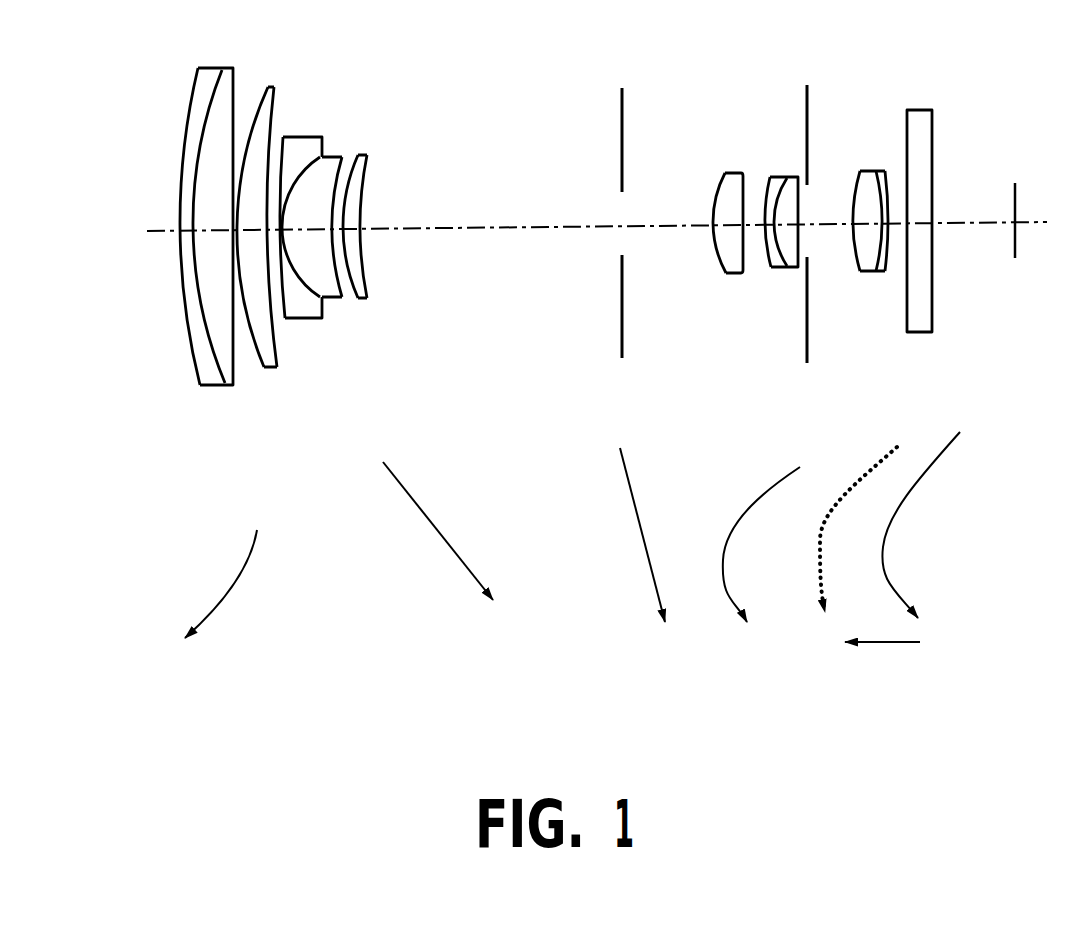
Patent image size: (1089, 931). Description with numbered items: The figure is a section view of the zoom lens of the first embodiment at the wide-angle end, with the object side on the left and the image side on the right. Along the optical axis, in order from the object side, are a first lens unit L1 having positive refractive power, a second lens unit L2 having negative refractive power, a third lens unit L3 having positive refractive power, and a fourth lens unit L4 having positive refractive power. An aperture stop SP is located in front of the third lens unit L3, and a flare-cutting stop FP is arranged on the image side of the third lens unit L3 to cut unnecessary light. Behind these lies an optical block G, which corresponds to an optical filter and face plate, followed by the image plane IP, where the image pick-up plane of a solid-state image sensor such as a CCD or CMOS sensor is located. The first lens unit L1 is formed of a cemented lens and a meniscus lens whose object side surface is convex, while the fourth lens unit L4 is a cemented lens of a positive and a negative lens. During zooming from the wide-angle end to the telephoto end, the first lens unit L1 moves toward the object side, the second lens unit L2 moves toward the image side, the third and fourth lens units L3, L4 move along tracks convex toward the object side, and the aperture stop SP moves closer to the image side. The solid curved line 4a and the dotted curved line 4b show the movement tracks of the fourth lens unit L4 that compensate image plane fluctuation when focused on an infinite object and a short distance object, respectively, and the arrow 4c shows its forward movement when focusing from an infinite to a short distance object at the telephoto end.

The first lens unit L1 is at (310, 430).
The second lens unit L2 is at (417, 345).
The third lens unit L3 is at (823, 413).
The fourth lens unit L4 is at (889, 307).
The aperture stop SP is at (627, 325).
The flare-cutting stop FP is at (807, 123).
The optical block G is at (918, 118).
The image plane IP is at (1015, 200).
The solid curved line 4a is at (924, 525).
The dotted curved line 4b is at (835, 529).
The arrow 4c is at (882, 675).